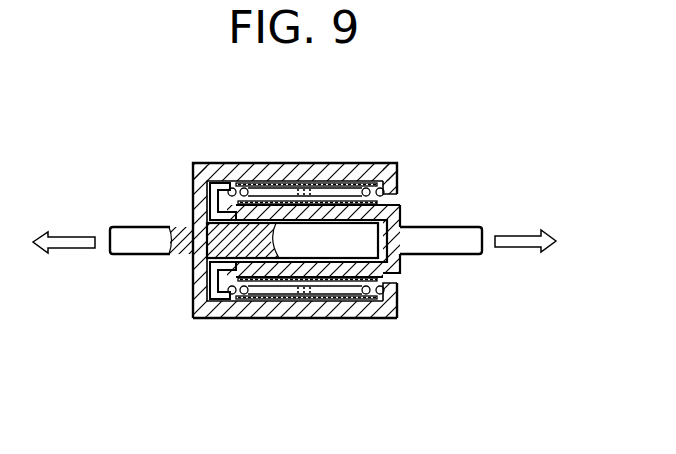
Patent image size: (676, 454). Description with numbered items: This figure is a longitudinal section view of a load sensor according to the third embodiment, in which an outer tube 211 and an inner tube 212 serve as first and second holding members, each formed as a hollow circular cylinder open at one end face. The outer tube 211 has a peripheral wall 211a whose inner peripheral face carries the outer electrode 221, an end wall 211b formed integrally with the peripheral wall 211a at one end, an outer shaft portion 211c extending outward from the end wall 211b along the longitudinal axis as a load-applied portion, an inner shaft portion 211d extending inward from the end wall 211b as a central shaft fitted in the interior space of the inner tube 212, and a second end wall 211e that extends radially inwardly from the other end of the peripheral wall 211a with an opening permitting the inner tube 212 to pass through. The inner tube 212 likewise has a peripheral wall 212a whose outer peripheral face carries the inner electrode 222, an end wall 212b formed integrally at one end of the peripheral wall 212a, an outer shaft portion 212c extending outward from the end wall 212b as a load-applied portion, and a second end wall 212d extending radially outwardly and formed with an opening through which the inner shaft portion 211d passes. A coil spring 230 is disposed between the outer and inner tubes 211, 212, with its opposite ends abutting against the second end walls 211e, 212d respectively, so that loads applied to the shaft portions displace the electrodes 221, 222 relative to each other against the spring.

The outer tube 211 is at (208, 157).
The peripheral wall 211a is at (225, 318).
The end wall 211b is at (200, 284).
The outer shaft portion 211c is at (120, 232).
The inner shaft portion 211d is at (317, 240).
The second end wall 211e is at (399, 186).
The inner tube 212 is at (416, 198).
The peripheral wall 212a is at (352, 276).
The end wall 212b is at (401, 257).
The outer shaft portion 212c is at (457, 235).
The second end wall 212d is at (206, 182).
The outer electrode 221 is at (279, 300).
The inner electrode 222 is at (328, 281).
The coil spring 230 is at (233, 184).